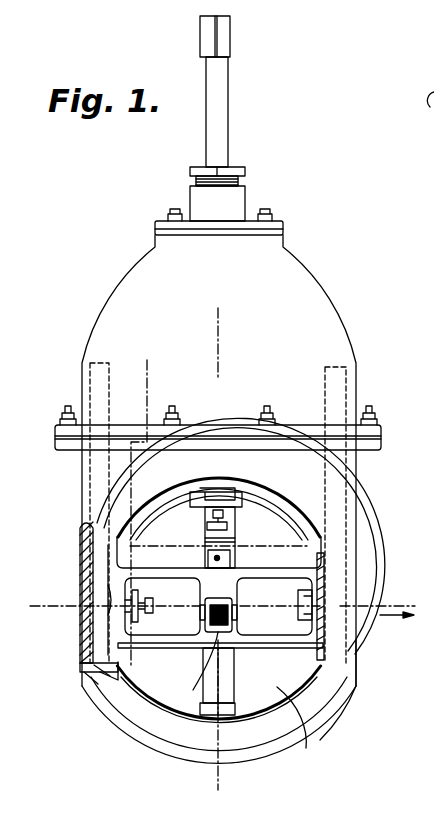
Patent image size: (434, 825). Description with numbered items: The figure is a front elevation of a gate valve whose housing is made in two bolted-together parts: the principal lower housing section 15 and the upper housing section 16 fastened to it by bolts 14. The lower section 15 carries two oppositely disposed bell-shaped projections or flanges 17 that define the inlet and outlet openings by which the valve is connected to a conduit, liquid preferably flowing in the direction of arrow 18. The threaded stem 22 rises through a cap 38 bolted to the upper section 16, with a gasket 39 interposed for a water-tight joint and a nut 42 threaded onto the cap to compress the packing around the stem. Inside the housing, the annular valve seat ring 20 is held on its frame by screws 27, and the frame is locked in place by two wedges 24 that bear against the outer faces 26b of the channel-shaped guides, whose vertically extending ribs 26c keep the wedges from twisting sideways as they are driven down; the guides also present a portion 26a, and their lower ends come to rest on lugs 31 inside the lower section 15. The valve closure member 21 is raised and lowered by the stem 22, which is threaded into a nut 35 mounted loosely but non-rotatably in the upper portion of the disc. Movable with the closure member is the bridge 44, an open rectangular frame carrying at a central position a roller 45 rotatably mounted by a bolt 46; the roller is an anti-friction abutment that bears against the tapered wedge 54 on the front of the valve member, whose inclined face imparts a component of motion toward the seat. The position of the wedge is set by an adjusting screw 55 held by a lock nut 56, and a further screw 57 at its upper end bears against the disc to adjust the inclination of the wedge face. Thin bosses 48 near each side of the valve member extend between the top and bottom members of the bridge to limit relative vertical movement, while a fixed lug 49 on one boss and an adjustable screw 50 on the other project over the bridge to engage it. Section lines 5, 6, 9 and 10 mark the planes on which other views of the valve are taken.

The section line 5- 5 is at (222, 322).
The section line 6- 6 is at (148, 365).
The section line 9- 9 is at (45, 606).
The section line 10- 10 is at (170, 530).
The bolts 14 is at (66, 406).
The lower housing section 15 is at (127, 733).
The upper housing section 16 is at (314, 293).
The bell shaped projections or flanges 17 is at (317, 702).
The arrow 18 is at (396, 631).
The annular valve seat ring 20 is at (262, 498).
The valve closure member 21 is at (301, 727).
The stem 22 is at (225, 127).
The wedges 24 is at (93, 532).
The liner portion 26a is at (108, 592).
The outer face of channel guides 26b is at (88, 667).
The vertically extending ribs 26c is at (95, 670).
The screws 27 is at (152, 507).
The lugs 31 is at (102, 680).
The nut 35 is at (220, 489).
The cap 38 is at (238, 200).
The gasket 39 is at (286, 236).
The nut 42 is at (250, 170).
The bridge 44 is at (257, 648).
The roller 45 is at (194, 665).
The bolt 46 is at (238, 616).
The thin boss 48 is at (146, 602).
The fixed pin or integral lug 49 is at (305, 606).
The screw 50 is at (150, 613).
The tapered wedge 54 is at (208, 562).
The adjusting screw 55 is at (213, 517).
The lock nut 56 is at (228, 526).
The screw 57 is at (232, 557).